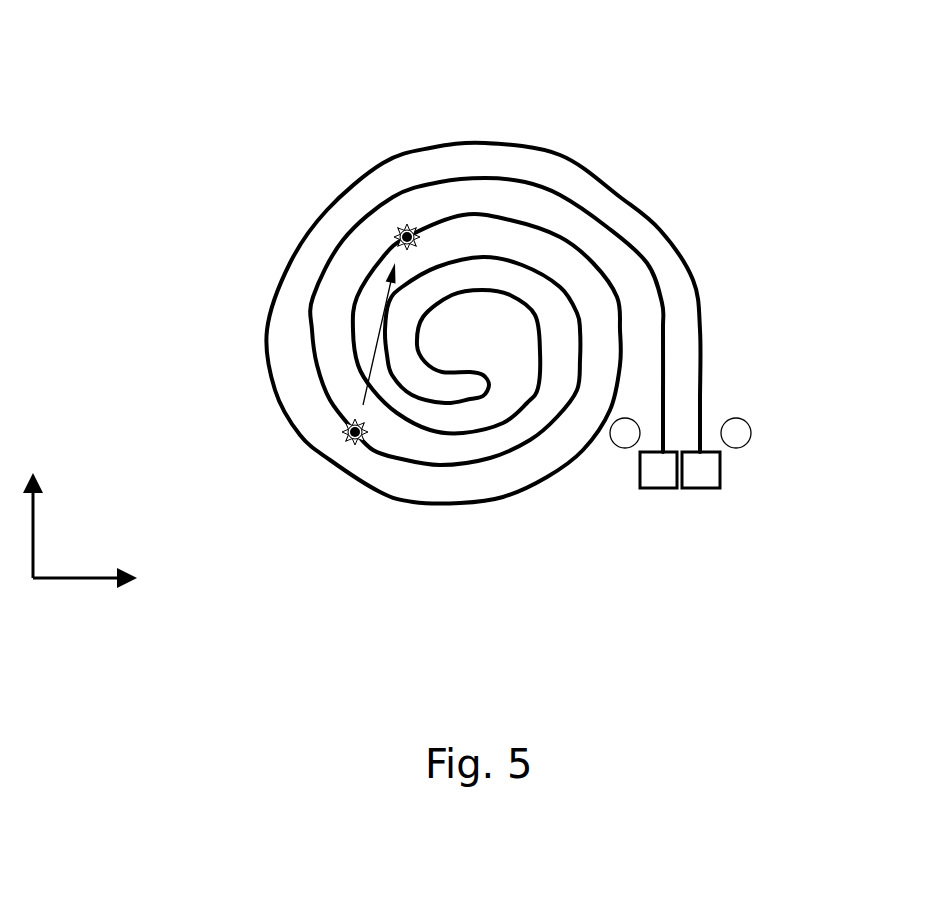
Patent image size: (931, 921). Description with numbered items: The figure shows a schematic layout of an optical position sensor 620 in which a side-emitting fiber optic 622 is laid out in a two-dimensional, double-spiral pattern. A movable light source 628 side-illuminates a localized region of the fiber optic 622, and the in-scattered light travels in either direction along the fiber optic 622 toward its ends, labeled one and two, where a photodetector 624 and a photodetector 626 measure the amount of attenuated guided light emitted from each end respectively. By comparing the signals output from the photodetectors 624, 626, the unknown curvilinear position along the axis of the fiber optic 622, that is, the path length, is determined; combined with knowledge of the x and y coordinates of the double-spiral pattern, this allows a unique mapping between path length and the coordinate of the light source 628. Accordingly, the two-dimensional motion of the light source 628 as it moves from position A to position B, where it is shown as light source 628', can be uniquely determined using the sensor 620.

The optical position sensor 620 is at (100, 111).
The side-emitting fiber optic 622 is at (682, 232).
The photodetector 624 is at (645, 497).
The photodetector 626 is at (715, 497).
The movable light source 628 is at (299, 488).
The movable light source 628' is at (332, 185).